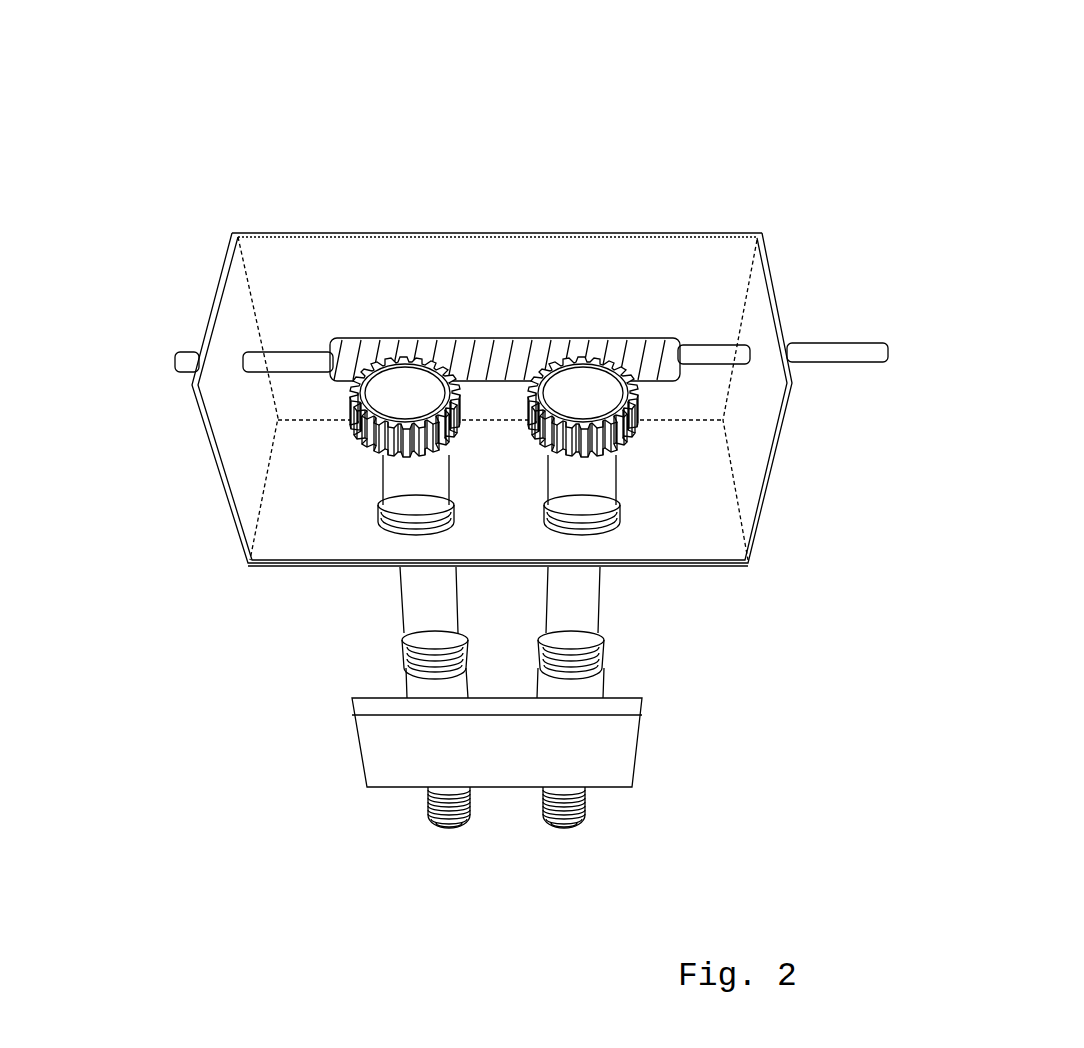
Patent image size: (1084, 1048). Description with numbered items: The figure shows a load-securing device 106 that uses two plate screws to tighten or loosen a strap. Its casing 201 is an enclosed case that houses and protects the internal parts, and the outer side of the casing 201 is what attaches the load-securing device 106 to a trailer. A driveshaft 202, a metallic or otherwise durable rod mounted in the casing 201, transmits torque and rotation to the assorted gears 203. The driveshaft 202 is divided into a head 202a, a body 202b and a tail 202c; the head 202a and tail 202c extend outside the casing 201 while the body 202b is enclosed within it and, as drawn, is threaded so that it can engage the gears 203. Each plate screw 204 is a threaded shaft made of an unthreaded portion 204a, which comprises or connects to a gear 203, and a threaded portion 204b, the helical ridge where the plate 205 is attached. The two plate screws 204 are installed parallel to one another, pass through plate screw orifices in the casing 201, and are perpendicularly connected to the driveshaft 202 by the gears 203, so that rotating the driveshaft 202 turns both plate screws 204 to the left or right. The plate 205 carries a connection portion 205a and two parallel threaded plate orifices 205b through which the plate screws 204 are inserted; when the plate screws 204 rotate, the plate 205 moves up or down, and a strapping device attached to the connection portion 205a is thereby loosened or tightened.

The load-securing device 106 is at (750, 128).
The casing 201 is at (250, 563).
The driveshaft 202 is at (493, 253).
The head 202a is at (185, 350).
The body 202b is at (510, 338).
The tail 202c is at (800, 350).
The gear 203 is at (357, 437).
The plate screw 204 is at (578, 600).
The unthreaded portion 204a is at (420, 578).
The threaded portion 204b is at (438, 822).
The plate 205 is at (497, 728).
The connection portion 205a is at (378, 745).
The threaded plate orifice 205b is at (402, 652).